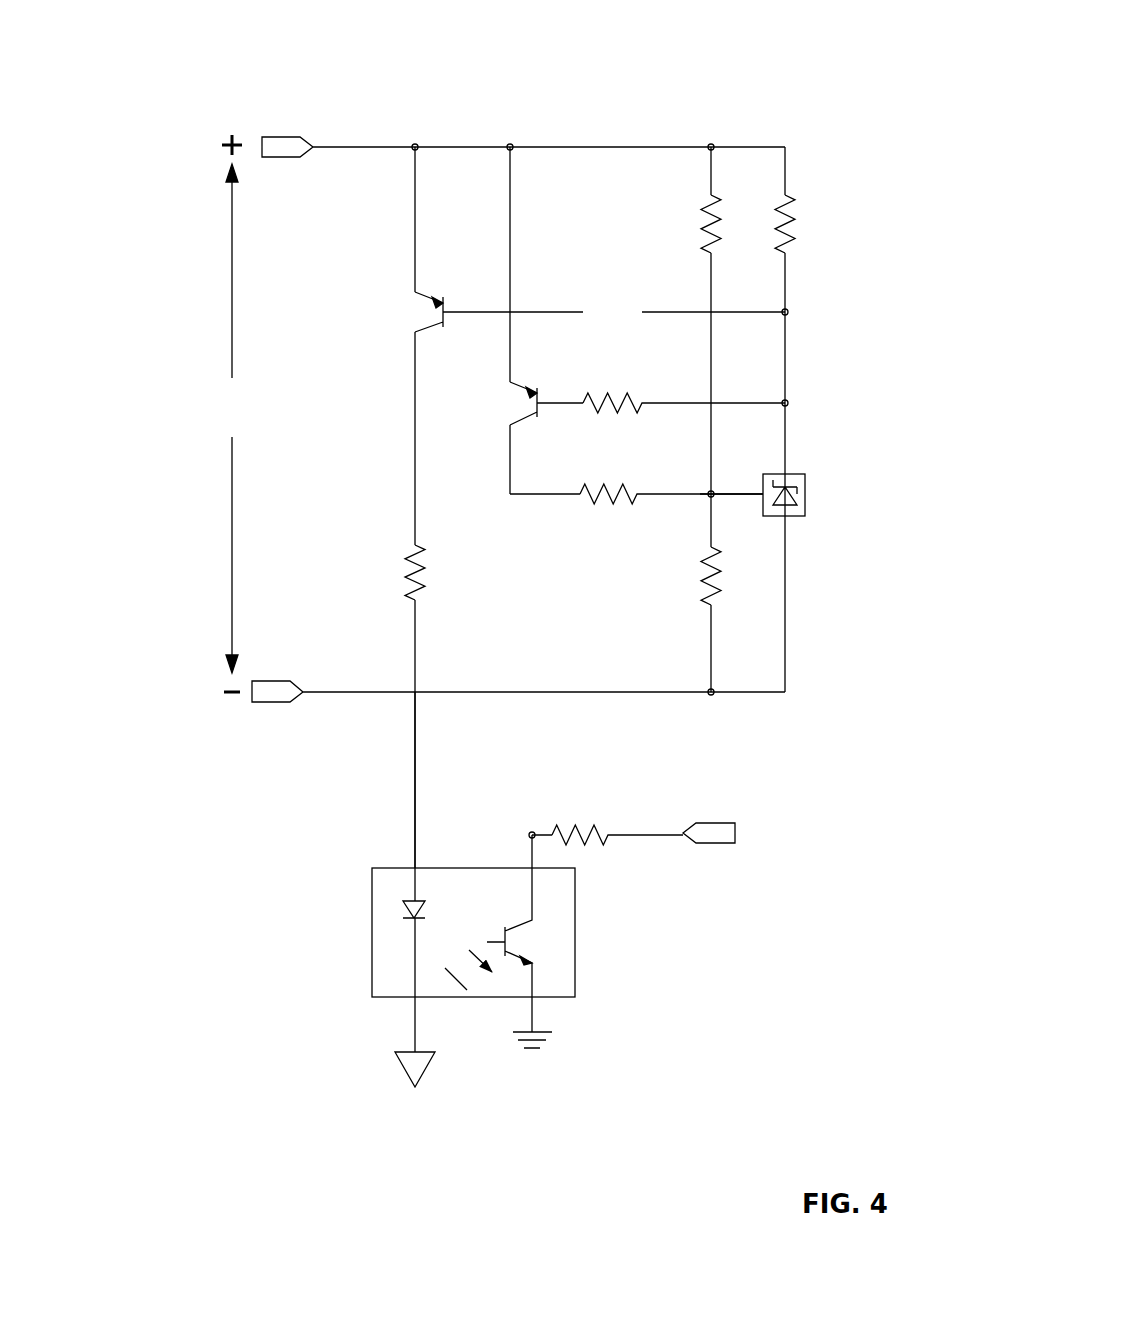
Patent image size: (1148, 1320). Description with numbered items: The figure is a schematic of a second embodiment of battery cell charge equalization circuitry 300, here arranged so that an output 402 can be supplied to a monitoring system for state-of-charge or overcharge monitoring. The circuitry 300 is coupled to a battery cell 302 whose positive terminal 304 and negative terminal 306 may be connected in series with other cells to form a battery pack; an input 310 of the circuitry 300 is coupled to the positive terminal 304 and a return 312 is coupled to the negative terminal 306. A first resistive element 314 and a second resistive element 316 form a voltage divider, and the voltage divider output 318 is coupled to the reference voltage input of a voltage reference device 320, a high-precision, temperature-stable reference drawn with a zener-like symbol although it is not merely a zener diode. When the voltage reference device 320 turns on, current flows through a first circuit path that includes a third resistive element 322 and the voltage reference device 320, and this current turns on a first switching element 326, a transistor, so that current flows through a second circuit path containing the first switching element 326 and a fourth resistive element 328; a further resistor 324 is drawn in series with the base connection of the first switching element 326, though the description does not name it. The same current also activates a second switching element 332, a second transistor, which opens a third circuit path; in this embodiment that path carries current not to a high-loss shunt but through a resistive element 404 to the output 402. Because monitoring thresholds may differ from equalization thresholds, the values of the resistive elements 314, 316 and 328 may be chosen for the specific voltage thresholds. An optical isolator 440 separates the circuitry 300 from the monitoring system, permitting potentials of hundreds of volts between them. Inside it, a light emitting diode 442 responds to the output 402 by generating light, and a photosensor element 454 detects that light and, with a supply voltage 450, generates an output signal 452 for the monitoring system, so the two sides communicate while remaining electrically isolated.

The battery cell charge equalization circuitry 300 is at (240, 66).
The battery cell 302 is at (197, 392).
The positive terminal 304 is at (281, 136).
The negative terminal 306 is at (276, 702).
The input 310 is at (686, 146).
The return 312 is at (651, 692).
The first resistive element 314 is at (688, 215).
The second resistive element 316 is at (682, 598).
The voltage divider output 318 is at (737, 494).
The voltage reference device 320 is at (796, 474).
The third resistive element 322 is at (802, 213).
The resistor 324 is at (613, 421).
The first switching element 326 is at (523, 403).
The fourth resistive element 328 is at (600, 515).
The second switching element 332 is at (418, 316).
The output 402 is at (413, 795).
The resistive element 404 is at (400, 555).
The optical isolator 440 is at (372, 887).
The light emitting diode 442 is at (400, 921).
The supply voltage 450 is at (702, 844).
The output signal 452 is at (531, 830).
The photosensor element 454 is at (534, 941).